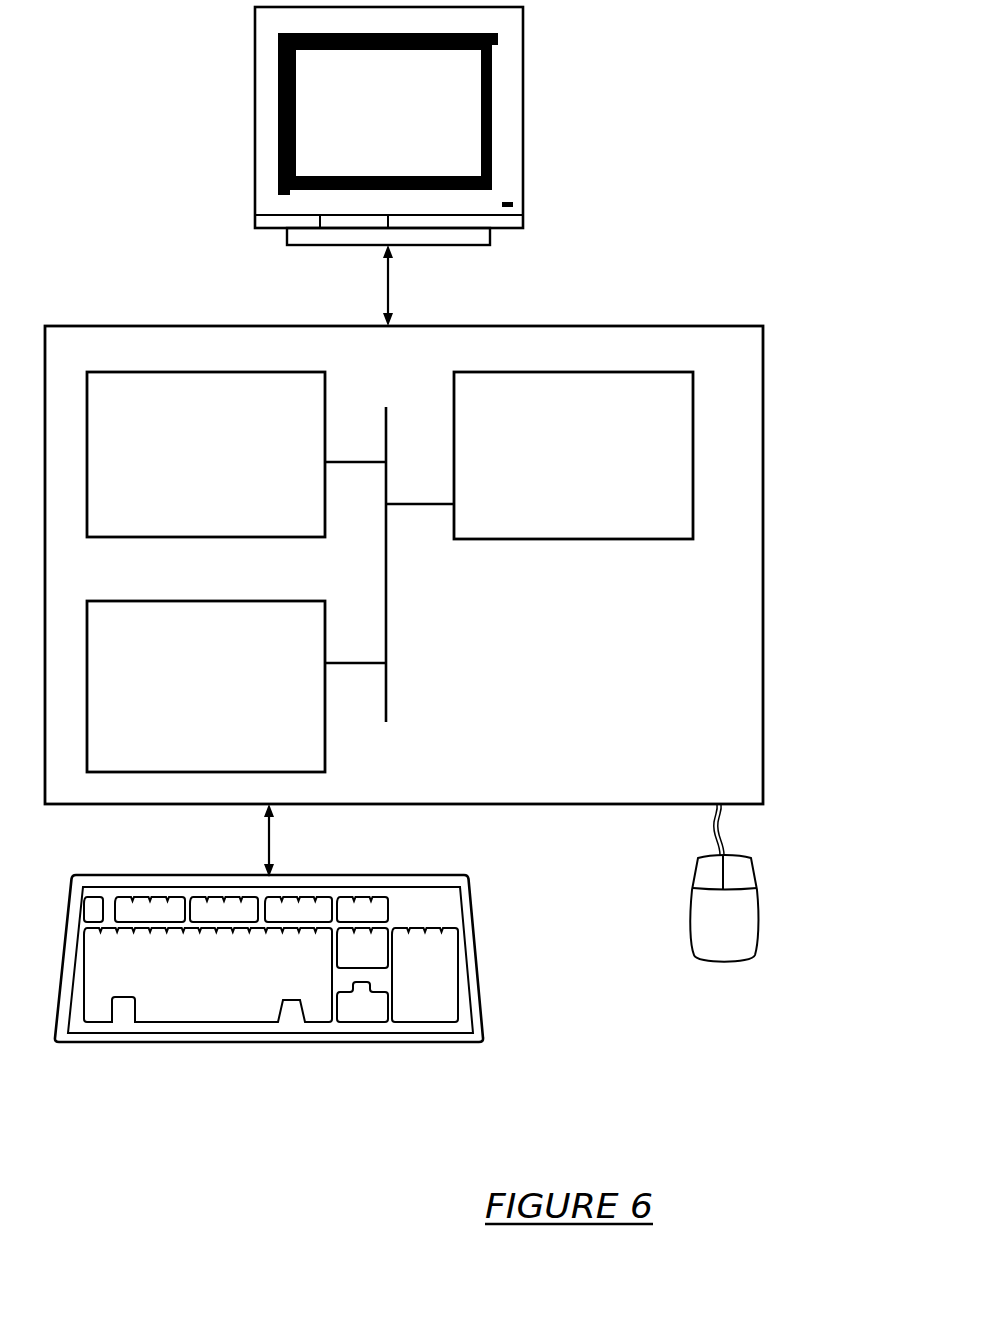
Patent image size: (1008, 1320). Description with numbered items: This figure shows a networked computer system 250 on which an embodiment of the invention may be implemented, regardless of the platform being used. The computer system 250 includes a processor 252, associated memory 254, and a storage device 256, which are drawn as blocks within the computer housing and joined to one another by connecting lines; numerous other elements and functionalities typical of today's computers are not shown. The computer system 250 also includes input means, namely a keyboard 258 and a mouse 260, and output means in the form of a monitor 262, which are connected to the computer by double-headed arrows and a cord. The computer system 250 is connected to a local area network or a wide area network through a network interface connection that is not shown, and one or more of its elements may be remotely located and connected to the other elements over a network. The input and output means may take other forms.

The networked computer system 250 is at (459, 468).
The processor 252 is at (569, 467).
The memory 254 is at (184, 466).
The storage device 256 is at (182, 699).
The keyboard 258 is at (175, 1001).
The mouse 260 is at (765, 913).
The monitor 262 is at (364, 129).